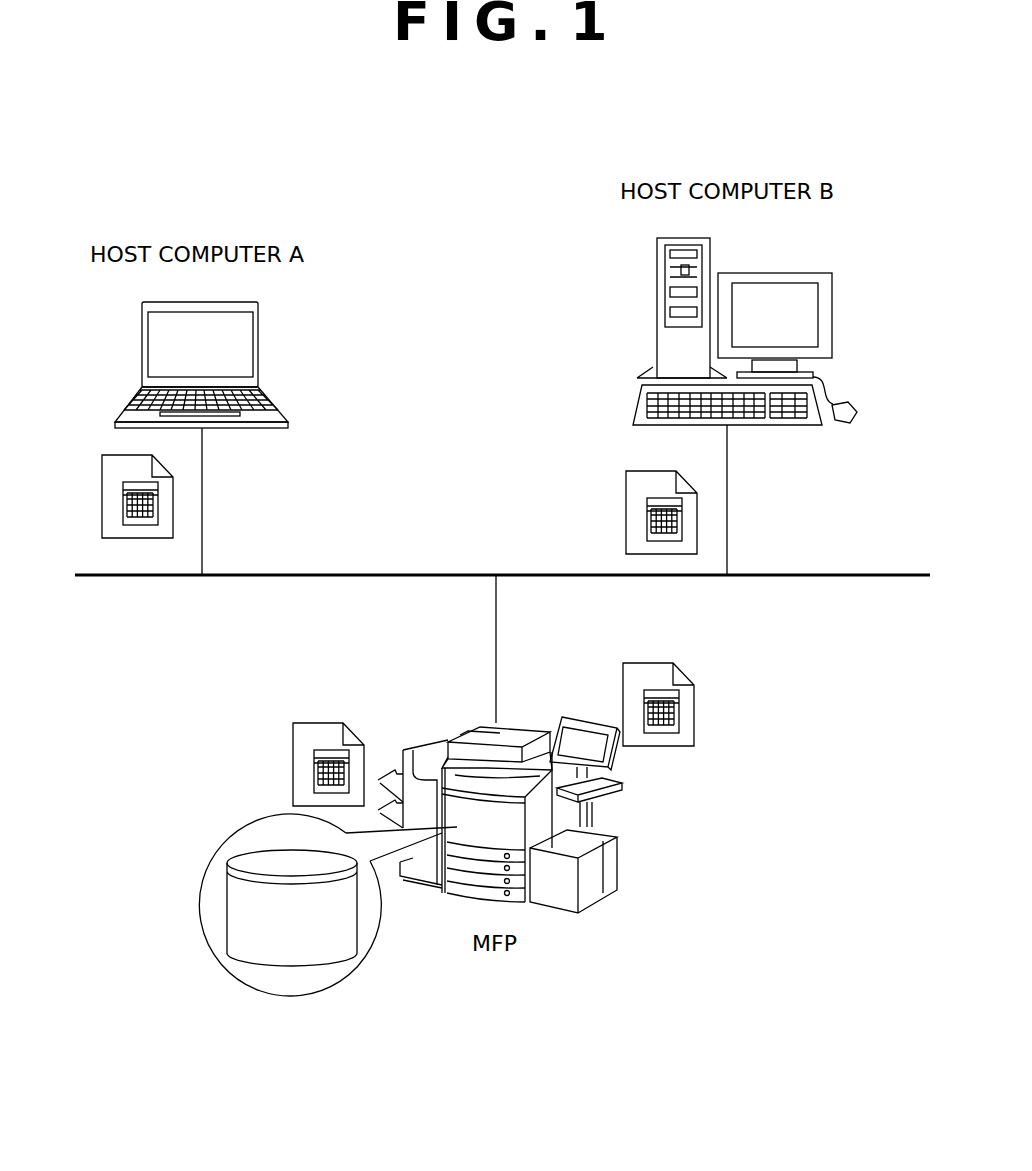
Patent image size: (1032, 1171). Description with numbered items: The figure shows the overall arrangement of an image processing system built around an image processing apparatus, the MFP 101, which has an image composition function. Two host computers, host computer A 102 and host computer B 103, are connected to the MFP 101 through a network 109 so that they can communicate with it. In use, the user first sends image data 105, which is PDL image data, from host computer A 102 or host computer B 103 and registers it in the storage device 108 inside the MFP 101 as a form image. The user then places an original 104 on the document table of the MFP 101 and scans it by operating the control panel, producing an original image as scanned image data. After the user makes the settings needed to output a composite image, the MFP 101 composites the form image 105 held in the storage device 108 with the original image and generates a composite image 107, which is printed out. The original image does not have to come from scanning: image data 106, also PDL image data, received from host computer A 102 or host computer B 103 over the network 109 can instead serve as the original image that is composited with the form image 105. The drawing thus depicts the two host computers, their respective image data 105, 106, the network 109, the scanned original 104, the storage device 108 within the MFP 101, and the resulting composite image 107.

The MFP 101 is at (617, 875).
The host computer A 102 is at (142, 347).
The host computer B 103 is at (833, 317).
The original 104 is at (677, 750).
The image data 105 is at (102, 488).
The image data 106 is at (626, 505).
The composite image 107 is at (293, 757).
The storage device 108 is at (227, 892).
The network 109 is at (360, 577).